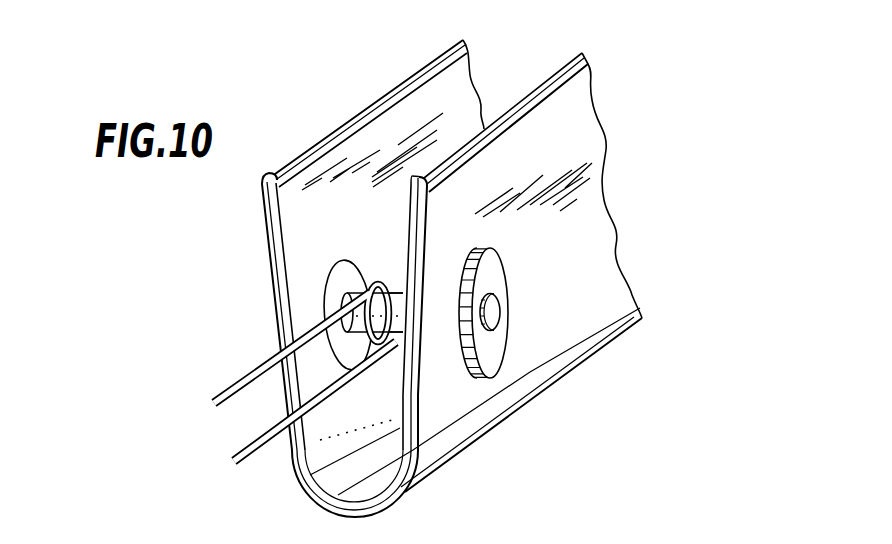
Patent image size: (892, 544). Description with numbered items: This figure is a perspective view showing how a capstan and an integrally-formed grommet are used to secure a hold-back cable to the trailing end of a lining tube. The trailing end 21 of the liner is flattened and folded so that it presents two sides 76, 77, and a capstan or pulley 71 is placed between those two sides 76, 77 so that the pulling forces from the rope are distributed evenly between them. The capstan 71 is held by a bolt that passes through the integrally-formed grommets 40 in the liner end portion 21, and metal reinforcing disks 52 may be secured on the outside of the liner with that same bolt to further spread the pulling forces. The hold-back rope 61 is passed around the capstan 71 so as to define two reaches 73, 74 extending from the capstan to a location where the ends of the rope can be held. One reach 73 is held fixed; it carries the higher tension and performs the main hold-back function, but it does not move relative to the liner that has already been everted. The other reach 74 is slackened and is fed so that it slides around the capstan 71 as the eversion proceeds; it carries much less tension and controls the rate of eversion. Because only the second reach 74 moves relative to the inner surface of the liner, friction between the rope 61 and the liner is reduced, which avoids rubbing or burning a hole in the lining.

The trailing end of the liner 21 is at (425, 278).
The integrally-formed grommet 40 is at (347, 262).
The metal reinforcing disk 52 is at (492, 270).
The hold-back rope 61 is at (280, 400).
The capstan 71 is at (402, 340).
The fixed reach of hold-back rope 73 is at (279, 343).
The second reach of hold-back rope 74 is at (258, 451).
The first side of the flattened and folded liner end portion 76 is at (268, 232).
The second side of the flattened and folded liner end portion 77 is at (420, 212).